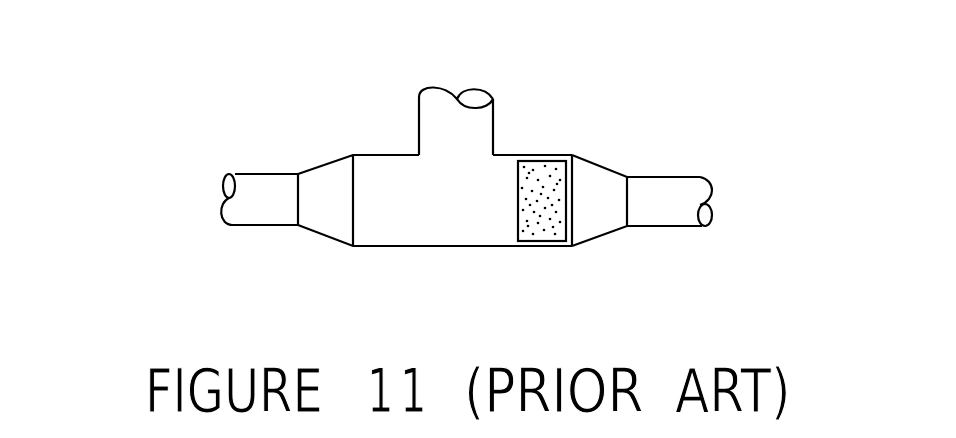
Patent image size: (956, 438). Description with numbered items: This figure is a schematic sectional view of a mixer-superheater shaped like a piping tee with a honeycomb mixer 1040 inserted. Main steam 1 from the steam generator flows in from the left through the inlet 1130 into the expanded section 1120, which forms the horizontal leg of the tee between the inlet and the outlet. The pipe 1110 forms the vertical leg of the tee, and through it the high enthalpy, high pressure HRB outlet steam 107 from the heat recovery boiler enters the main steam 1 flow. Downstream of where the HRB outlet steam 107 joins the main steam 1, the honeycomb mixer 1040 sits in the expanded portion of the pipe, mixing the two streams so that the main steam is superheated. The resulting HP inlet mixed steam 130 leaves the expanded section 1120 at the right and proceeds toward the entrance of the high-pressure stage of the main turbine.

The main steam 1 is at (198, 197).
The HRB outlet steam 107 is at (456, 0).
The HP inlet mixed steam 130 is at (733, 201).
The honeycomb mixer 1040 is at (545, 243).
The pipe 1110 is at (418, 115).
The expanded section 1120 is at (389, 257).
The inlet 1130 is at (262, 225).